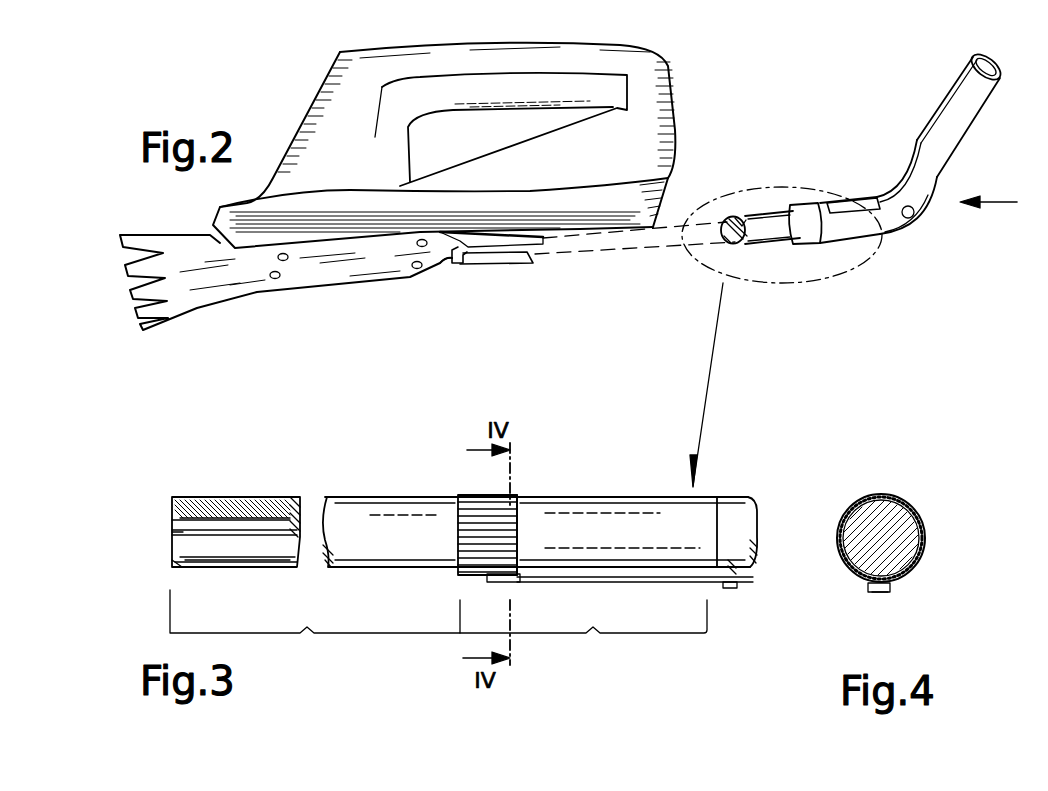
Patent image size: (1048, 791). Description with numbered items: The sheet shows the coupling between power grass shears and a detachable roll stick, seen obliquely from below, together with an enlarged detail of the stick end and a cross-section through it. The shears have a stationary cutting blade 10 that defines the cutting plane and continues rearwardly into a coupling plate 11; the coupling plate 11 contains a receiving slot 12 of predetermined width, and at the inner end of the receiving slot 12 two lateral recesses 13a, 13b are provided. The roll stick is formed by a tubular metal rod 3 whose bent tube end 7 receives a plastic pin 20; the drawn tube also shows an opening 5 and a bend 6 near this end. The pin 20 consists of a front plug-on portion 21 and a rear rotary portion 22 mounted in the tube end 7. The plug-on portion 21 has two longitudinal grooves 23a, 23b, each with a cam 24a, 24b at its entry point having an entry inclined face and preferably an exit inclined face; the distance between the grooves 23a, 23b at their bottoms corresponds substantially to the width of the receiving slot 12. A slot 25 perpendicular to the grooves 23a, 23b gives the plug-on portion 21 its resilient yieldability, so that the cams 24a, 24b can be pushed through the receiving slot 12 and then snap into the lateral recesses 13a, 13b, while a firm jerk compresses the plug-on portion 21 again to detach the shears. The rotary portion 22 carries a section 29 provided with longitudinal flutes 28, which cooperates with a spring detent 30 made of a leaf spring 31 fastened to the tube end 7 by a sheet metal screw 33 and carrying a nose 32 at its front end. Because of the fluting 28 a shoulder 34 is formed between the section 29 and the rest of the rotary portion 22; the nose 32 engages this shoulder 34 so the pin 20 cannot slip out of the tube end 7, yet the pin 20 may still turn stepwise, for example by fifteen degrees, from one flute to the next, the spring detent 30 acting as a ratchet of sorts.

In FIG. 2, the tubular metal rod 3 is at (944, 105).
In FIG. 2, the hole 5 is at (916, 222).
In FIG. 2, the bend of tube 6 is at (897, 183).
In FIG. 2, the tube end 7 is at (866, 225).
In FIG. 3, the tube end 7 is at (738, 506).
In FIG. 4, the tube end 7 is at (923, 518).
In FIG. 2, the stationary cutting blade 10 is at (198, 302).
In FIG. 2, the coupling plate 11 is at (447, 260).
In FIG. 2, the receiving slot 12 is at (525, 253).
In FIG. 2, the lateral recess 13a is at (470, 246).
In FIG. 2, the lateral recess 13b is at (457, 267).
In FIG. 2, the pin 20 is at (823, 148).
In FIG. 3, the pin 20 is at (393, 481).
In FIG. 2, the plug-on portion 21 is at (727, 218).
In FIG. 3, the plug-on portion 21 is at (315, 582).
In FIG. 2, the rotary portion 22 is at (838, 233).
In FIG. 3, the rotary portion 22 is at (608, 529).
In FIG. 2, the longitudinal groove 23a is at (775, 217).
In FIG. 3, the longitudinal groove 23a is at (233, 500).
In FIG. 2, the longitudinal groove 23b is at (727, 243).
In FIG. 3, the longitudinal groove 23b is at (233, 567).
In FIG. 2, the cam 24a is at (742, 216).
In FIG. 3, the cam 24a is at (188, 500).
In FIG. 2, the cam 24b is at (720, 240).
In FIG. 3, the cam 24b is at (172, 568).
In FIG. 2, the slot 25 is at (760, 244).
In FIG. 3, the slot 25 is at (172, 532).
In FIG. 4, the longitudinal flutes 28 is at (907, 503).
In FIG. 3, the section 29 is at (470, 500).
In FIG. 2, the spring detent 30 is at (865, 197).
In FIG. 3, the spring detent 30 is at (650, 584).
In FIG. 3, the leaf spring 31 is at (523, 582).
In FIG. 4, the leaf spring 31 is at (877, 593).
In FIG. 3, the nose 32 is at (487, 578).
In FIG. 4, the nose 32 is at (890, 587).
In FIG. 3, the sheet metal screw 33 is at (735, 589).
In FIG. 3, the shoulder 34 is at (520, 500).